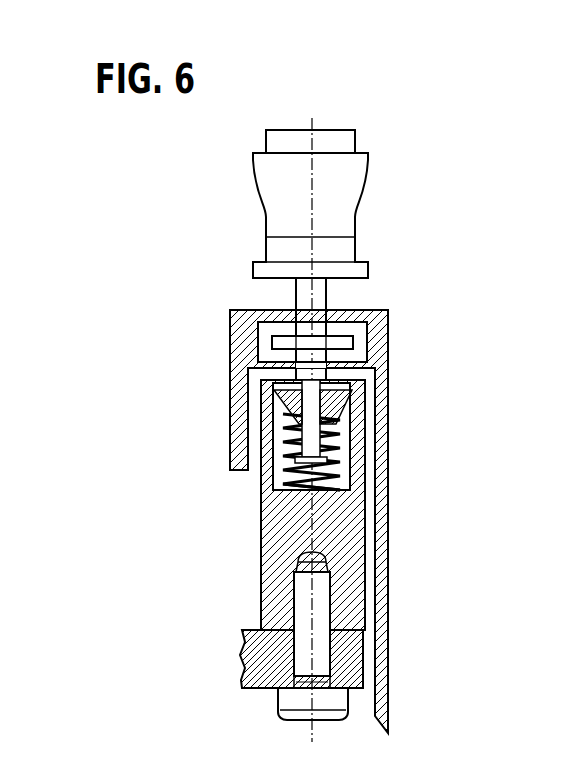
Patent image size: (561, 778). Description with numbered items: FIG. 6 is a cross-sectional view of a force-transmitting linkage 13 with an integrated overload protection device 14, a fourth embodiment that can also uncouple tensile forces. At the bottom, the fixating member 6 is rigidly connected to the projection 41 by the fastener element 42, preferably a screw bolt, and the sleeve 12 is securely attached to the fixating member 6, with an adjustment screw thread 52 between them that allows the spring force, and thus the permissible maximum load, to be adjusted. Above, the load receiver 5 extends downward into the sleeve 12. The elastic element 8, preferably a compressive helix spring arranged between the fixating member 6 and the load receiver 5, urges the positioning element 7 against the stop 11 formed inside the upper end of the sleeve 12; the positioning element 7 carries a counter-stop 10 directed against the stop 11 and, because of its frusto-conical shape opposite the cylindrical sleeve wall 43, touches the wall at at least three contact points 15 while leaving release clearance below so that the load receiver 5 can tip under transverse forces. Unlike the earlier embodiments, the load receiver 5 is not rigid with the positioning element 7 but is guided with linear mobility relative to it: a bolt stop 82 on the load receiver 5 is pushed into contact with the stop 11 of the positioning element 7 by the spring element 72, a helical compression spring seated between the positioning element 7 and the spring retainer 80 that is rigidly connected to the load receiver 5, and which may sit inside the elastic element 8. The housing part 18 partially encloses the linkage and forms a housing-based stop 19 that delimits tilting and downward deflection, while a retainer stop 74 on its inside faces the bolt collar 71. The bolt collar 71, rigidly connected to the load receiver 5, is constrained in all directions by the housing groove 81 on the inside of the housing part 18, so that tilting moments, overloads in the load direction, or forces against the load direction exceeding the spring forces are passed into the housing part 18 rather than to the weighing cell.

The load receiver 5 is at (333, 214).
The fixating member 6 is at (326, 570).
The positioning element 7 is at (285, 403).
The elastic element 8 is at (340, 447).
The counter-stop 10 is at (378, 372).
The stop 11 is at (352, 392).
The sleeve 12 is at (322, 476).
The force-transmitting linkage 13 is at (253, 563).
The overload protection device 14 is at (228, 478).
The contact point 15 is at (268, 402).
The housing part 18 is at (262, 380).
The housing-based stop 19 is at (380, 345).
The projection 41 is at (242, 660).
The fastener element 42 is at (300, 705).
The sleeve wall 43 is at (345, 500).
The adjustment screw thread 52 is at (262, 516).
The bolt collar 71 is at (272, 342).
The spring element 72 is at (335, 462).
The retainer stop 74 is at (367, 332).
The spring retainer 80 is at (263, 476).
The housing groove 81 is at (228, 322).
The bolt stop 82 is at (362, 440).